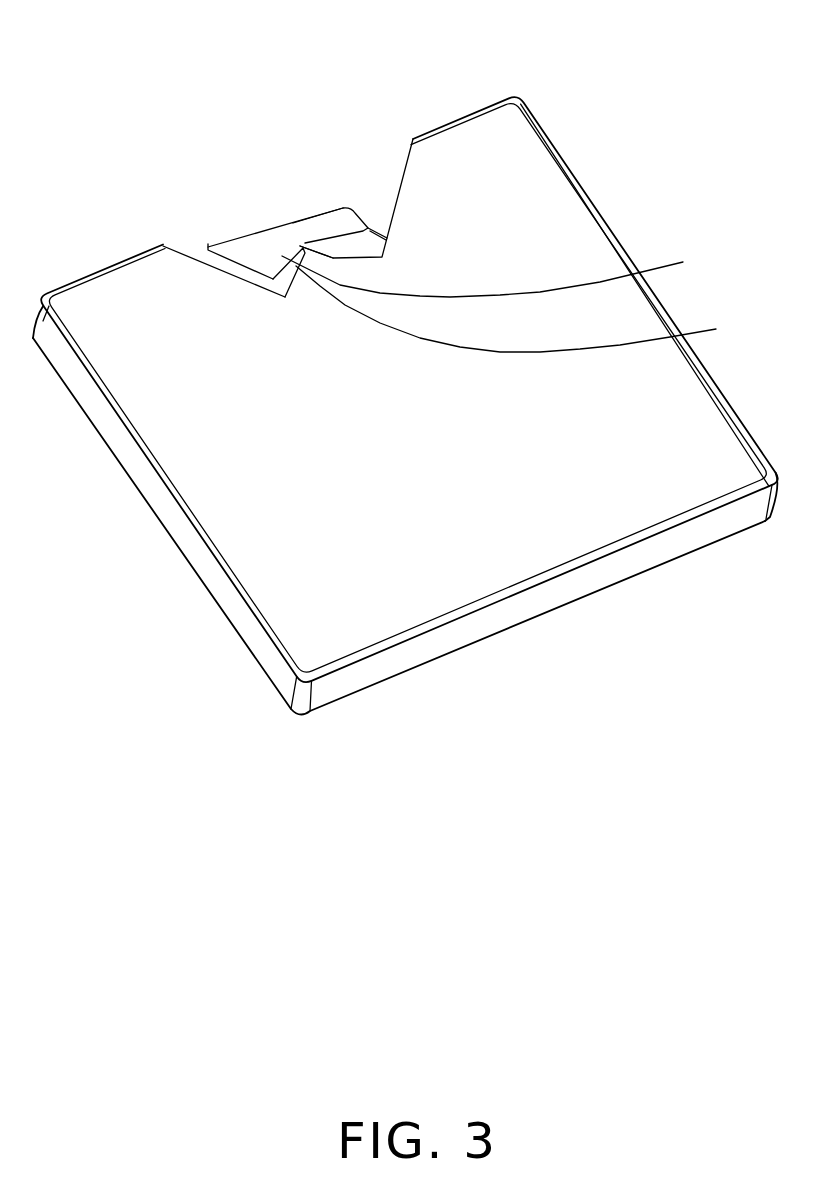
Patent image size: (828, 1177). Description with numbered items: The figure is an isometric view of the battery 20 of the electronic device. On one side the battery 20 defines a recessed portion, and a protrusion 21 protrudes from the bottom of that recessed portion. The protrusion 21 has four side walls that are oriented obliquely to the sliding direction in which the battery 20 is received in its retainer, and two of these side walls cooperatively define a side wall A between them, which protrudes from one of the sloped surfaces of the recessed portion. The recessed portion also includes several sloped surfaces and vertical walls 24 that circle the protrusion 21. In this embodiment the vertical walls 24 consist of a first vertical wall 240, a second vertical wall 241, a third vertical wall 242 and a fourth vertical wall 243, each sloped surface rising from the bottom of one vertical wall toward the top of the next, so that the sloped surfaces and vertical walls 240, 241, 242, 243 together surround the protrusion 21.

The battery 20 is at (569, 92).
The protrusion 21 is at (524, 309).
The side wall A is at (493, 272).
The vertical walls 24 is at (341, 96).
The first vertical wall 240 is at (197, 253).
The second vertical wall 241 is at (379, 227).
The third vertical wall 242 is at (325, 254).
The fourth vertical wall 243 is at (273, 280).